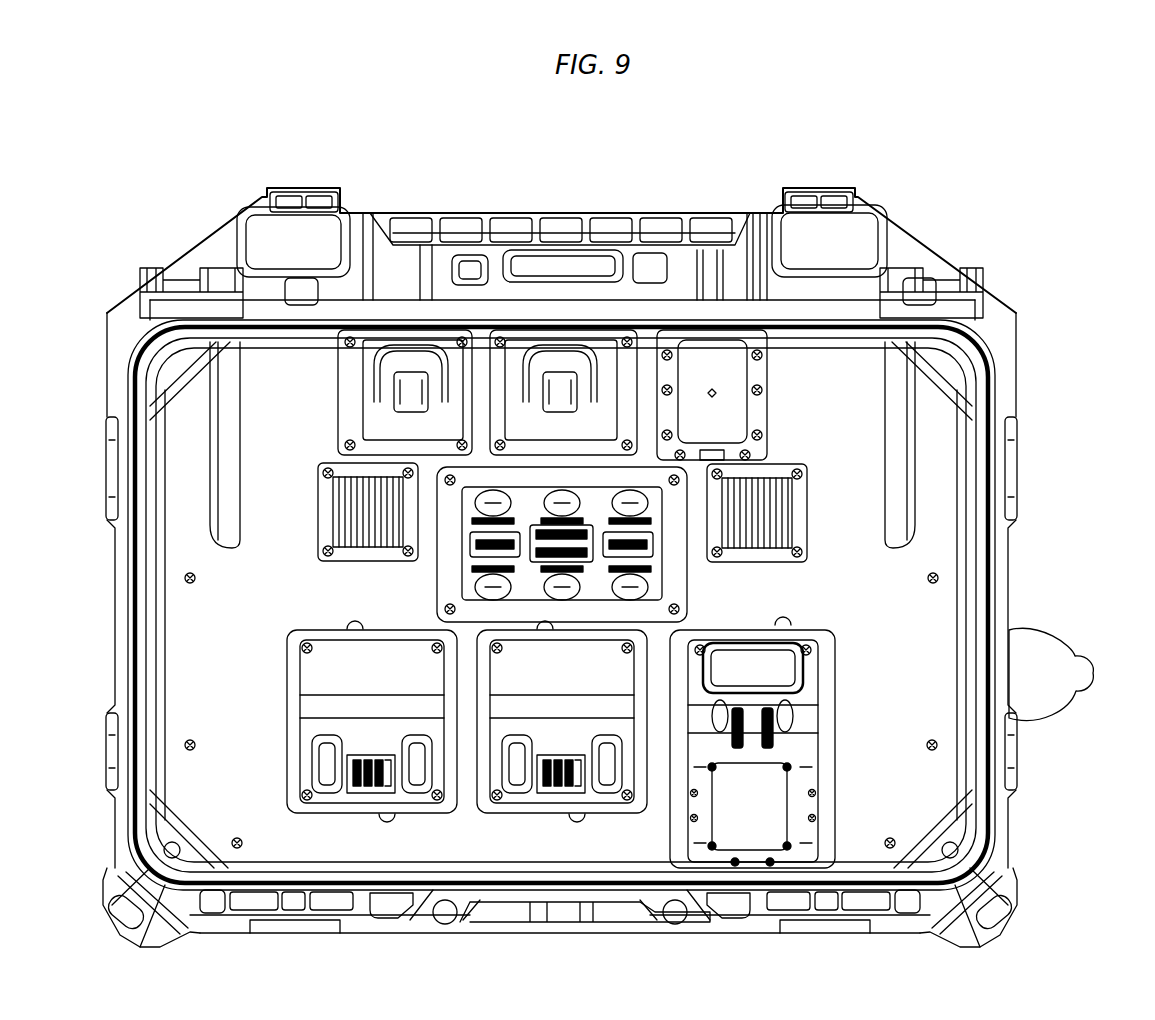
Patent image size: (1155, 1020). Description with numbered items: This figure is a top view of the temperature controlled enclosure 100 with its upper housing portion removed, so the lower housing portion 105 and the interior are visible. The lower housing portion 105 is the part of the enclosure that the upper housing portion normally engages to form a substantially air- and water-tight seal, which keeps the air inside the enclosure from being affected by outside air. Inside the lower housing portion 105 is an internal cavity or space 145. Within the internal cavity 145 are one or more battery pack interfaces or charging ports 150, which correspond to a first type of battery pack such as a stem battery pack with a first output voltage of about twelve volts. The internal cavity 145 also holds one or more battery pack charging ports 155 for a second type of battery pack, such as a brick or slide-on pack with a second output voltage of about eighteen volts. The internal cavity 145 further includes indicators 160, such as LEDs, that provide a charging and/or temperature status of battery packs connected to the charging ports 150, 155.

The temperature controlled enclosure 100 is at (1030, 122).
The lower housing portion 105 is at (1007, 305).
The internal cavity 145 is at (835, 486).
The battery pack charging ports 150 is at (338, 417).
The battery pack charging ports 155 is at (293, 685).
The indicators 160 is at (665, 547).